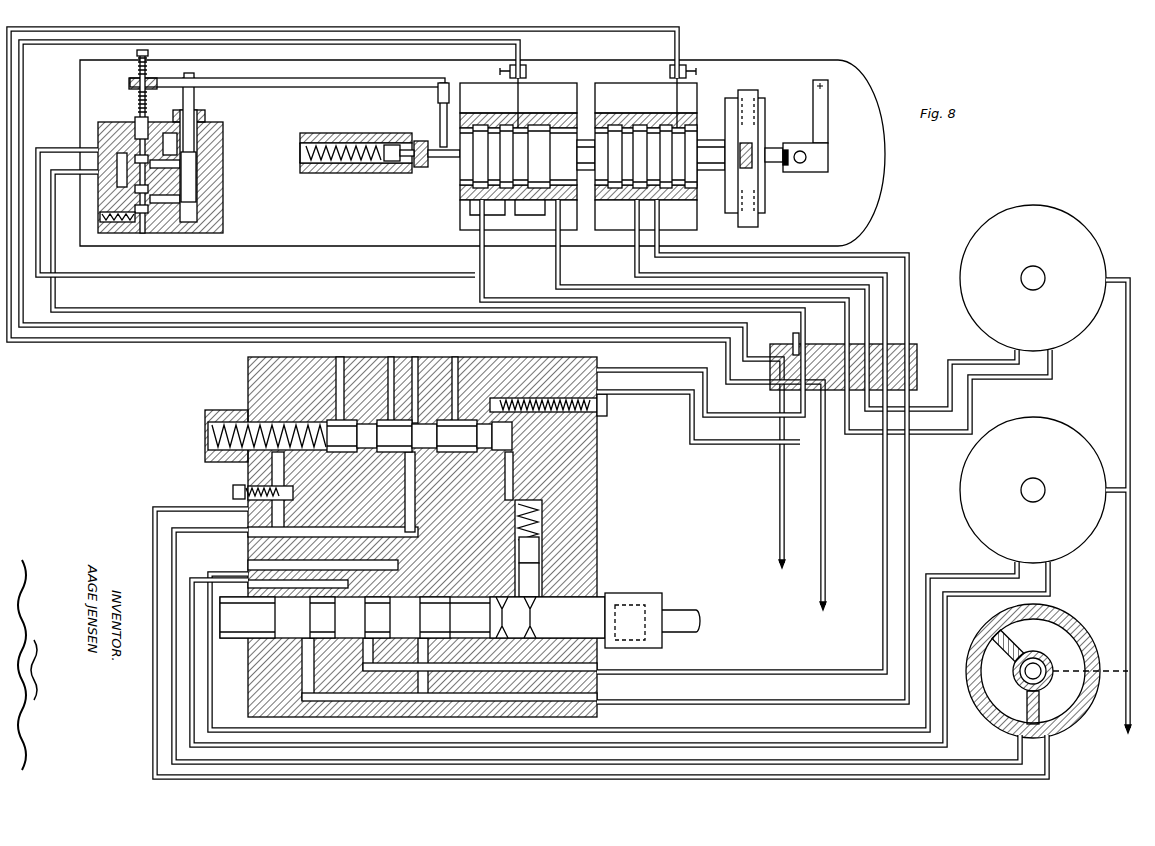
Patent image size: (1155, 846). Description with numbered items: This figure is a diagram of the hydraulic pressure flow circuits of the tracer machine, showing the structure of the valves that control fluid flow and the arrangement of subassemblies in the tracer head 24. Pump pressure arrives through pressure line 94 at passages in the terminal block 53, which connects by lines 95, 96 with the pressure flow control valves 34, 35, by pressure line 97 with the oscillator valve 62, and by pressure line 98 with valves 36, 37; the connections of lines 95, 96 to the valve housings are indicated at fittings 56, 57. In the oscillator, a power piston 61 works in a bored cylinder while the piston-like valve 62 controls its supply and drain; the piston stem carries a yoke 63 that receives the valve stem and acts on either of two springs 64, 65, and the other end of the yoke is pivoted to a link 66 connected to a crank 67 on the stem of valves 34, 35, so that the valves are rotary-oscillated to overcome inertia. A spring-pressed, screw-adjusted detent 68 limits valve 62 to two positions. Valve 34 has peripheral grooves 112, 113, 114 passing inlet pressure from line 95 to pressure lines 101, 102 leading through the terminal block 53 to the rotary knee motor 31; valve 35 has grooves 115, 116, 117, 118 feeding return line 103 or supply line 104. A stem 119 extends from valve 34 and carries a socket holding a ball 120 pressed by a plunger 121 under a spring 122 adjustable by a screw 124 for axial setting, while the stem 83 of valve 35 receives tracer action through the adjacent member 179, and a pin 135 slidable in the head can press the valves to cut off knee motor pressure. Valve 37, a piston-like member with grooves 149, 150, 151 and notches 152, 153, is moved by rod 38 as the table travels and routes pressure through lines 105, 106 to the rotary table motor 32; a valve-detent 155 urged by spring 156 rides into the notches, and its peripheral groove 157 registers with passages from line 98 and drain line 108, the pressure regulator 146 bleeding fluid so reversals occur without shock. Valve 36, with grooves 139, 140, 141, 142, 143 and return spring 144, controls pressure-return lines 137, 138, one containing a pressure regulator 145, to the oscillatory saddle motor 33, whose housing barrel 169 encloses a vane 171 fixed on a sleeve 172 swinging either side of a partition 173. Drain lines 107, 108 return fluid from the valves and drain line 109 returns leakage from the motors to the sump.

The tracer head 24 is at (842, 60).
The rotary knee motor 31 is at (1077, 210).
The rotary table motor 32 is at (1093, 412).
The oscillatory saddle motor 33 is at (1087, 623).
The pressure flow control valve 34 is at (542, 113).
The pressure flow control valve 35 is at (630, 113).
The valve 36 is at (272, 375).
The valve 37 is at (240, 639).
The rod 38 is at (680, 612).
The terminal block 53 is at (912, 347).
The solenoid valve 56 is at (510, 72).
The solenoid valve 57 is at (672, 66).
The power piston 61 is at (205, 190).
The piston-like valve 62 is at (135, 120).
The yoke 63 is at (293, 90).
The spring 64 is at (183, 100).
The spring 65 is at (137, 68).
The link 66 is at (440, 105).
The crank 67 is at (421, 170).
The detent 68 is at (122, 224).
The stem 83 is at (732, 165).
The pressure line 94 is at (780, 512).
The line 95 is at (521, 48).
The line 96 is at (680, 45).
The pressure line 97 is at (349, 310).
The pressure line 98 is at (652, 370).
The pressure line 101 is at (478, 262).
The pressure line 102 is at (556, 262).
The pressure line 103 is at (630, 258).
The pressure line 104 is at (660, 242).
The pressure line 105 is at (702, 732).
The pressure line 106 is at (793, 743).
The drain line 107 is at (206, 277).
The drain line 108 is at (720, 442).
The drain line 109 is at (1125, 375).
The peripheral groove 112 is at (479, 125).
The peripheral groove 113 is at (506, 125).
The peripheral groove 114 is at (545, 125).
The groove 115 is at (614, 125).
The groove 116 is at (640, 125).
The groove 117 is at (665, 125).
The groove 118 is at (688, 125).
The stem 119 is at (442, 83).
The ball 120 is at (394, 165).
The plunger 121 is at (392, 143).
The spring 122 is at (348, 173).
The screw 124 is at (306, 173).
The pin 135 is at (828, 90).
The pressure-return line 137 is at (176, 508).
The pressure-return line 138 is at (212, 530).
The groove 139 is at (342, 420).
The groove 140 is at (367, 424).
The groove 141 is at (425, 420).
The groove 142 is at (490, 404).
The groove 143 is at (500, 450).
The spring 144 is at (208, 433).
The pressure regulator 145 is at (235, 489).
The pressure regulator 146 is at (595, 416).
The groove 149 is at (282, 638).
The groove 150 is at (346, 638).
The groove 151 is at (408, 597).
The notch 152 is at (502, 640).
The notch 153 is at (530, 640).
The valve-detent 155 is at (541, 577).
The spring 156 is at (541, 515).
The peripheral groove 157 is at (541, 545).
The housing barrel 169 is at (976, 645).
The vane 171 is at (1015, 648).
The sleeve 172 is at (1022, 677).
The partition 173 is at (1040, 700).
The lever arm 179 is at (828, 160).